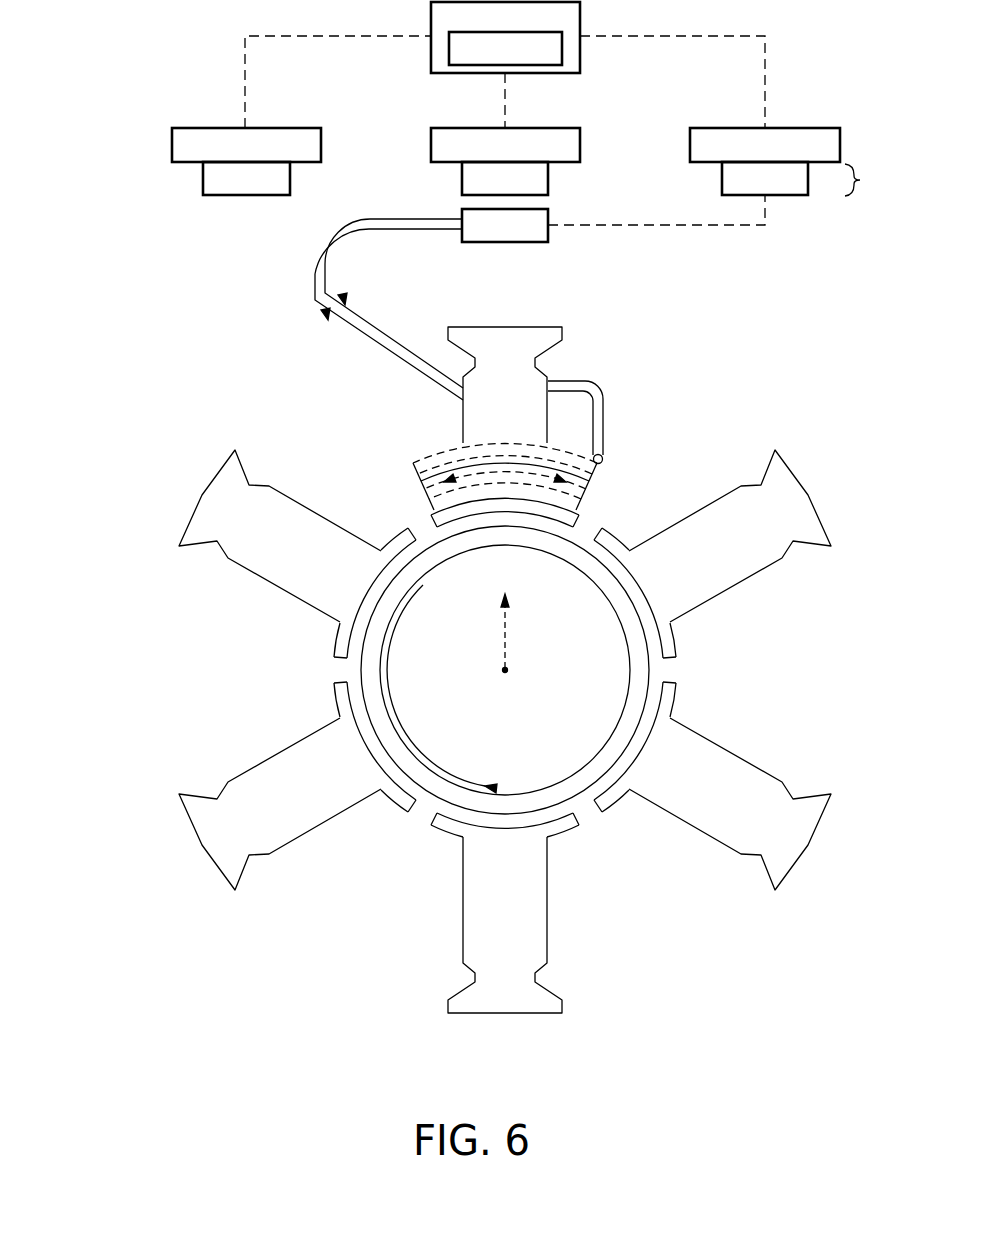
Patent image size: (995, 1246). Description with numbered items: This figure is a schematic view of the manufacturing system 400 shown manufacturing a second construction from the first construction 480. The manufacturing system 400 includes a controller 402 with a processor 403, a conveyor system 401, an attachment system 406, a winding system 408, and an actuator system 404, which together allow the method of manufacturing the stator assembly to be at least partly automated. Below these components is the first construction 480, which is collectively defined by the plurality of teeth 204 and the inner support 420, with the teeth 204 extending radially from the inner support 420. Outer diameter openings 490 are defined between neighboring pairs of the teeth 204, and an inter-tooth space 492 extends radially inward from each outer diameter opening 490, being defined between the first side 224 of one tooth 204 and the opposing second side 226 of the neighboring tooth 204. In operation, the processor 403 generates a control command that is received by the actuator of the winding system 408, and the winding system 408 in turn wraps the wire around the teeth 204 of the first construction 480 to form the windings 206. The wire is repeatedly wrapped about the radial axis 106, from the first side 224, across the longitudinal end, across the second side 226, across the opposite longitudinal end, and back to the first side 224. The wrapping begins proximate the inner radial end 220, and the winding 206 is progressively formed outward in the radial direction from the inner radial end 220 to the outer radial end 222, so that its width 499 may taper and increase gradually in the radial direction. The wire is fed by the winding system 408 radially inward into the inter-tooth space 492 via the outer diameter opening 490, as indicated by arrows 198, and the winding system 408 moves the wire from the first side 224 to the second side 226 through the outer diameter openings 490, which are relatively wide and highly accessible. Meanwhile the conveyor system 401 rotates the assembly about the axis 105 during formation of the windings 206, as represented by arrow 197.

The manufacturing system 400 is at (95, 5).
The controller 402 is at (431, 16).
The processor 403 is at (552, 66).
The conveyor system 401 is at (232, 120).
The attachment system 406 is at (468, 120).
The winding system 408 is at (824, 120).
The actuator system 404 is at (880, 181).
The arrows 198 is at (331, 285).
The teeth 204 is at (462, 322).
The outer radial end 222 is at (508, 328).
The first side 224 is at (463, 411).
The second side 226 is at (548, 422).
The windings 206 is at (391, 445).
The first construction 480 is at (191, 493).
The outer diameter openings 490 is at (276, 372).
The inter-tooth space 492 is at (371, 489).
The width 499 is at (543, 468).
The inner radial end 220 is at (460, 518).
The inner support 420 is at (676, 668).
The arrow 197 is at (398, 736).
The radial axis 106 is at (508, 641).
The axis 105 is at (507, 672).